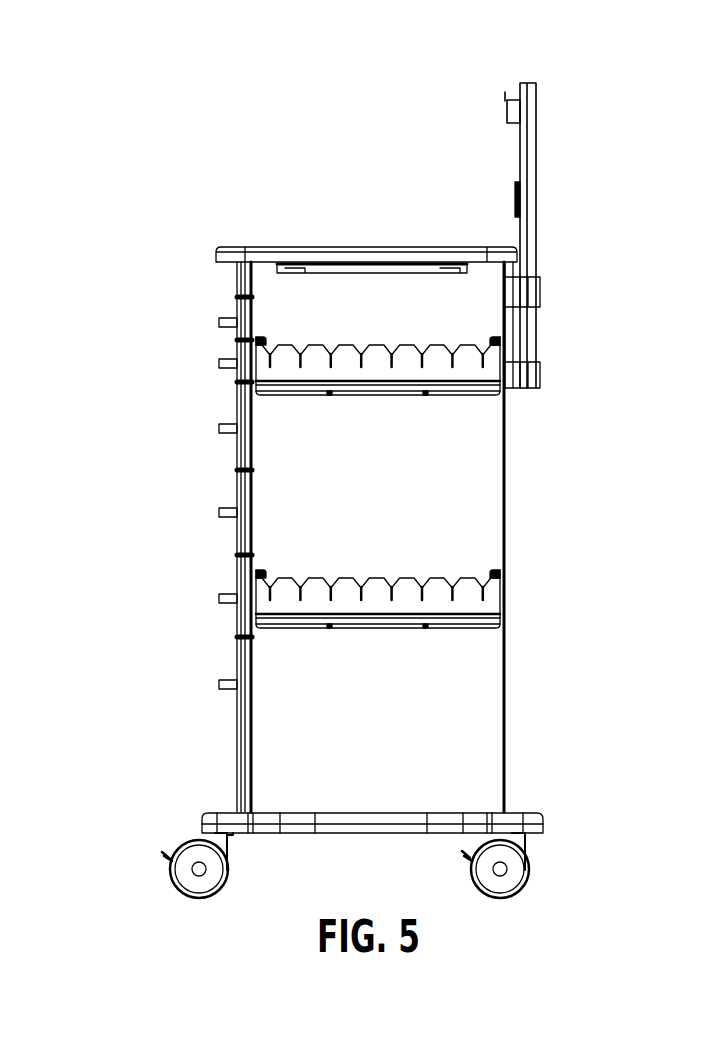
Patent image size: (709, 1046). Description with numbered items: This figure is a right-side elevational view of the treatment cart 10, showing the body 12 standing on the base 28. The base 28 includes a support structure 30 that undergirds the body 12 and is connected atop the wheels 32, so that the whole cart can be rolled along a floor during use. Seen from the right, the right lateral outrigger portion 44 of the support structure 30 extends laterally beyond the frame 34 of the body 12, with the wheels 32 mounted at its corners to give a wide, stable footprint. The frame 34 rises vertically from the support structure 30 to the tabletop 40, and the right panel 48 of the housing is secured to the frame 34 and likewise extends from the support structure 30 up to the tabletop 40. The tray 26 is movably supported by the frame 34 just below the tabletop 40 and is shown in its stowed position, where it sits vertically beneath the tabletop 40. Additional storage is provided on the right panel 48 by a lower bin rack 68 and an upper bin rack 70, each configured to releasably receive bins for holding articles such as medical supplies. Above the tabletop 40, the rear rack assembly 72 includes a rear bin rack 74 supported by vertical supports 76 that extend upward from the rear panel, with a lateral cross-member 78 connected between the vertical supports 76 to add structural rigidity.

The treatment cart 10 is at (141, 109).
The body 12 is at (146, 531).
The tray 26 is at (358, 275).
The base 28 is at (137, 809).
The support structure 30 is at (313, 837).
The wheels 32 is at (212, 868).
The frame 34 is at (505, 447).
The tabletop 40 is at (262, 246).
The right lateral outrigger portion 44 is at (393, 829).
The right panel 48 is at (455, 519).
The lower bin rack 68 is at (290, 604).
The upper bin rack 70 is at (290, 373).
The rear rack assembly 72 is at (553, 93).
The rear bin rack 74 is at (507, 110).
The vertical supports 76 is at (531, 142).
The lateral cross-member 78 is at (515, 191).